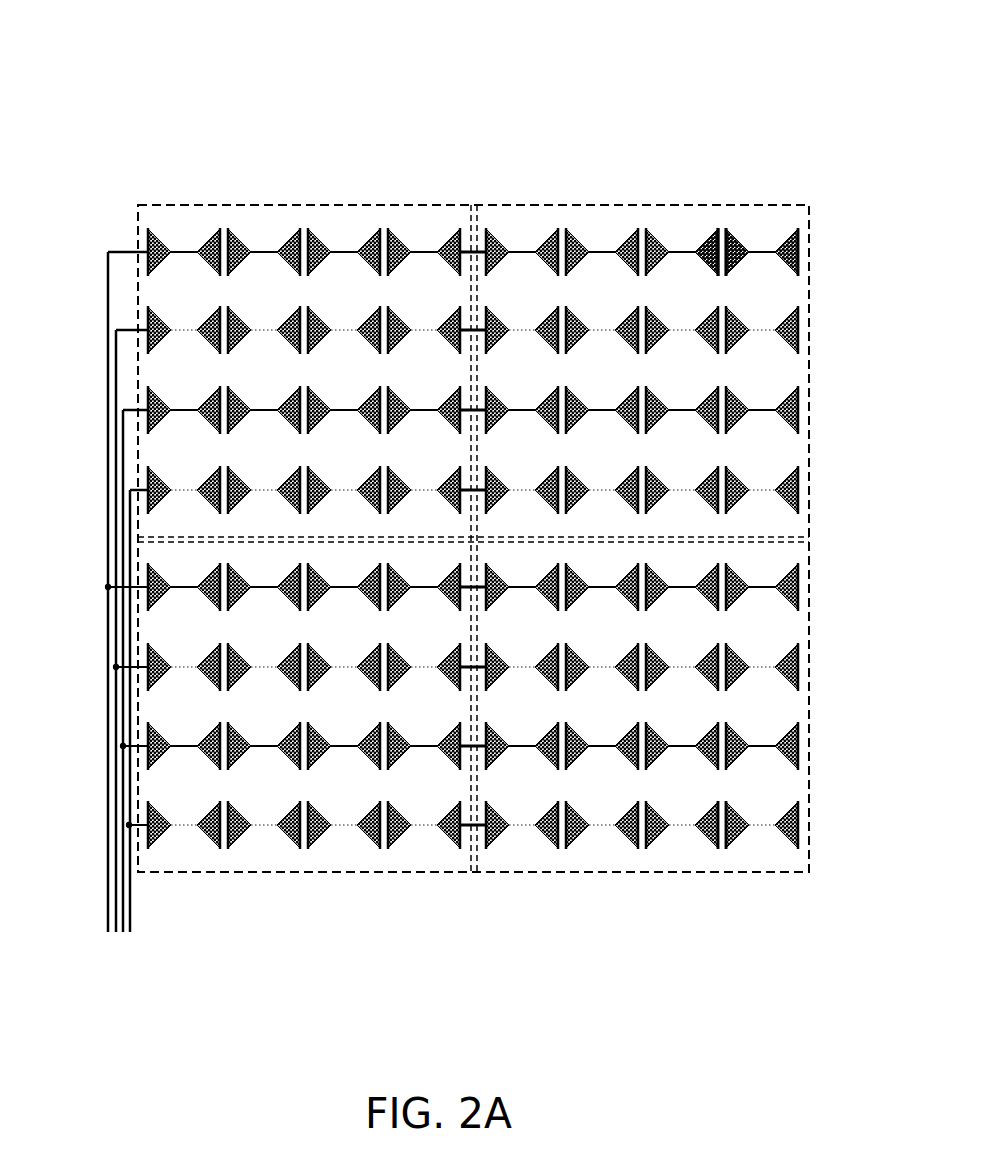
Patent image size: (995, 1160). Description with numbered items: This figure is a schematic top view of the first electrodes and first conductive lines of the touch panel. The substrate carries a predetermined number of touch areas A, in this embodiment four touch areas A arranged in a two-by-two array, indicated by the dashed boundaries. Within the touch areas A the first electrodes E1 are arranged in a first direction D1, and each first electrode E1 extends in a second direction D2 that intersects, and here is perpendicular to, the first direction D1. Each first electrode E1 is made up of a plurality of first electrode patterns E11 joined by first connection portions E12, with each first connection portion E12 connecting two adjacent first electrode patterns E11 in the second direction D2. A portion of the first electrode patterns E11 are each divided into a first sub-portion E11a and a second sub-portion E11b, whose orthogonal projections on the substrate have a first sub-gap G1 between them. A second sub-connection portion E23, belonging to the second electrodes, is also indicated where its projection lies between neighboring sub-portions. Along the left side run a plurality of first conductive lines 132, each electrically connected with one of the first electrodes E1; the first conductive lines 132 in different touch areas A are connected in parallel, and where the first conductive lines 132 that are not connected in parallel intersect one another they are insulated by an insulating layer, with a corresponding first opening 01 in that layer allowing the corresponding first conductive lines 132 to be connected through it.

The first electrode E1 is at (799, 239).
The first electrode pattern E11 is at (773, 146).
The first sub-portion E11a is at (712, 246).
The second sub-portion E11b is at (733, 247).
The first connection portion E12 is at (760, 250).
The second sub-connection portion E23 is at (717, 258).
The first sub-gap G1 is at (722, 840).
The first opening 01 is at (104, 591).
The first conductive line 132 is at (131, 934).
The touch area A is at (136, 212).
The first direction D1 is at (68, 12).
The second direction D2 is at (68, 12).